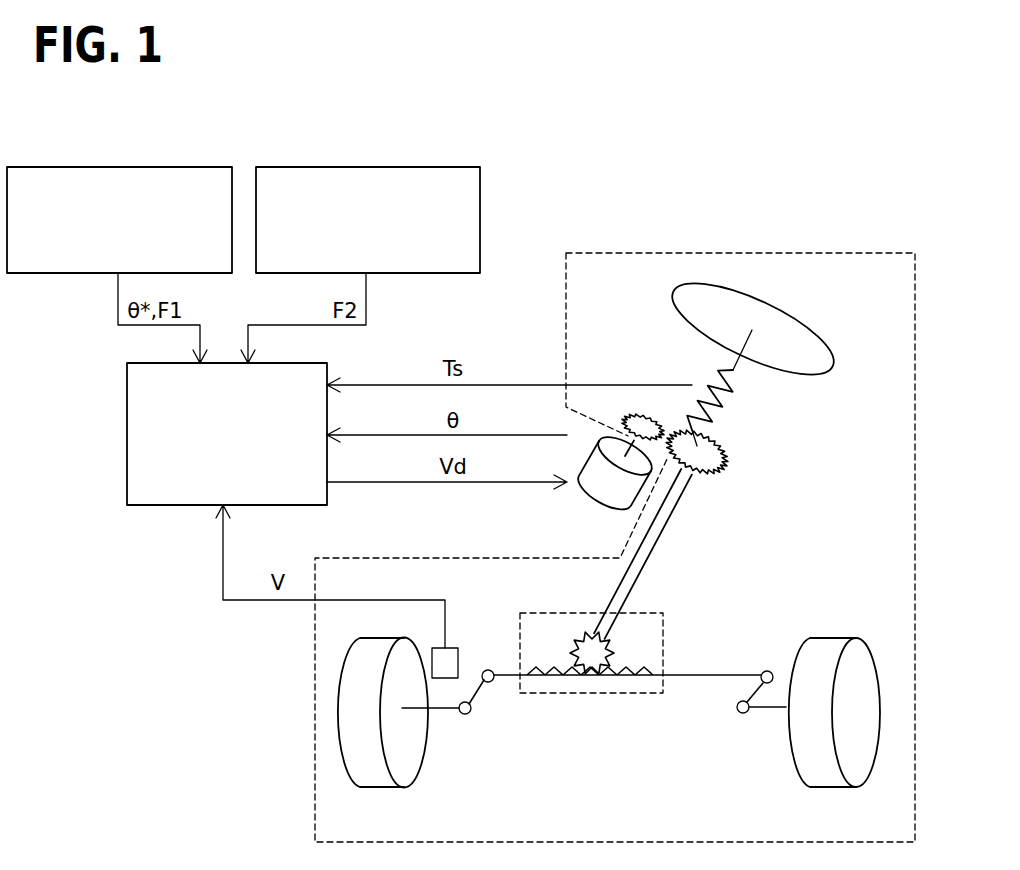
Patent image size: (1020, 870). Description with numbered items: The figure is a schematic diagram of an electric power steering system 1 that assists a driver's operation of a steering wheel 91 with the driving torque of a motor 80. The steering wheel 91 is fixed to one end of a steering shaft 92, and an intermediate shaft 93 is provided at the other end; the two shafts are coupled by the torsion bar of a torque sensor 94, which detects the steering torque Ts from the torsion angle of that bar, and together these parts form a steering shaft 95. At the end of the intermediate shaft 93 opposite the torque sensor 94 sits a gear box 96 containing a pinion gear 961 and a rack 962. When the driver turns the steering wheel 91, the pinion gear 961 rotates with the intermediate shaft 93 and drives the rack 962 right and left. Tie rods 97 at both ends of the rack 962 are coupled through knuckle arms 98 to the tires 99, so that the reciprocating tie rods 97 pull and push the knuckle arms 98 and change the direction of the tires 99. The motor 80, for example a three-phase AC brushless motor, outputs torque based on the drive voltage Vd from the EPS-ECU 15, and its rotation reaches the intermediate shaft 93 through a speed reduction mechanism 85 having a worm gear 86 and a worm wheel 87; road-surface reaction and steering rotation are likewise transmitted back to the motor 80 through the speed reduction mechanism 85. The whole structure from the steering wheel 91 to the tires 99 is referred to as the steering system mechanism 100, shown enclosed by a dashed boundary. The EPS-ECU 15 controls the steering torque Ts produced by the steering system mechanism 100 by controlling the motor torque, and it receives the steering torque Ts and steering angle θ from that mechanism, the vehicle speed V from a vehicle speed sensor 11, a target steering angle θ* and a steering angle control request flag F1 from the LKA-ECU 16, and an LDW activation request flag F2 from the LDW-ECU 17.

The electric power steering system 1 is at (604, 193).
The steering system mechanism 100 is at (748, 252).
The LKA-ECU 16 is at (116, 165).
The LDW-ECU 17 is at (366, 165).
The EPS-ECU 15 is at (125, 439).
The vehicle speed sensor 11 is at (450, 645).
The steering wheel 91 is at (818, 345).
The steering shaft 92 is at (748, 383).
The intermediate shaft 93 is at (690, 488).
The torque sensor 94 is at (728, 448).
The steering shaft 95 is at (850, 385).
The speed reduction mechanism 85 is at (648, 333).
The worm gear 86 is at (632, 418).
The worm wheel 87 is at (683, 436).
The motor 80 is at (602, 505).
The gear box 96 is at (648, 612).
The pinion gear 961 is at (585, 635).
The rack 962 is at (620, 680).
The tie rods 97 is at (498, 682).
The knuckle arms 98 is at (435, 712).
The tires 99 is at (370, 762).